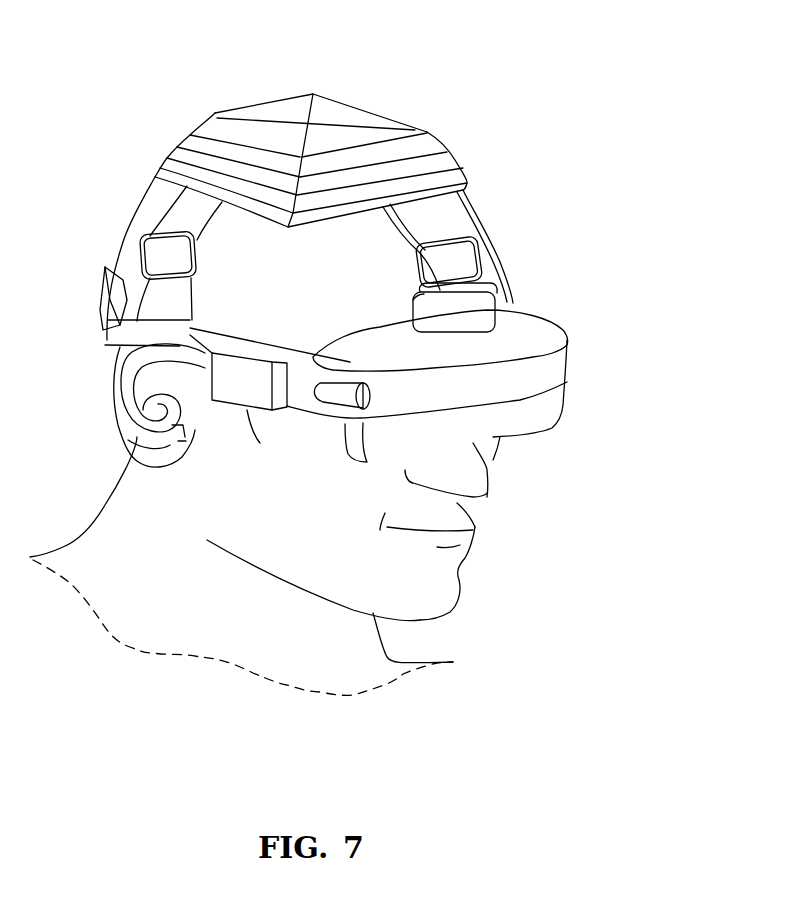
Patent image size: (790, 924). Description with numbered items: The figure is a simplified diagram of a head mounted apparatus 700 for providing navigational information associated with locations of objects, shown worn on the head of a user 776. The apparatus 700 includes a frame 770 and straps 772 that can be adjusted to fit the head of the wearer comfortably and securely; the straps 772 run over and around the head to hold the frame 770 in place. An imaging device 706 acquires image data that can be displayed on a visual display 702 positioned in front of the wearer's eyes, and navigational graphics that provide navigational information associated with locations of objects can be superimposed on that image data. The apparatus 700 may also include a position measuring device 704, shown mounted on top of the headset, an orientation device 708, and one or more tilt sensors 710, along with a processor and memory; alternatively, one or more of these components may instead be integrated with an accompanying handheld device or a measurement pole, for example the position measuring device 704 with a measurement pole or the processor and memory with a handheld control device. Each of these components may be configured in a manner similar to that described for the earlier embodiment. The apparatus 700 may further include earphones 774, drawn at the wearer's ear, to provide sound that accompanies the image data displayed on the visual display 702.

The head mounted apparatus 700 is at (353, 85).
The visual display 702 is at (550, 418).
The position measuring device 704 is at (257, 102).
The imaging device 706 is at (382, 447).
The orientation device 708 is at (513, 303).
The tilt sensor 710 is at (333, 407).
The frame 770 is at (550, 372).
The straps 772 is at (443, 223).
The earphones 774 is at (128, 424).
The user head 776 is at (219, 601).